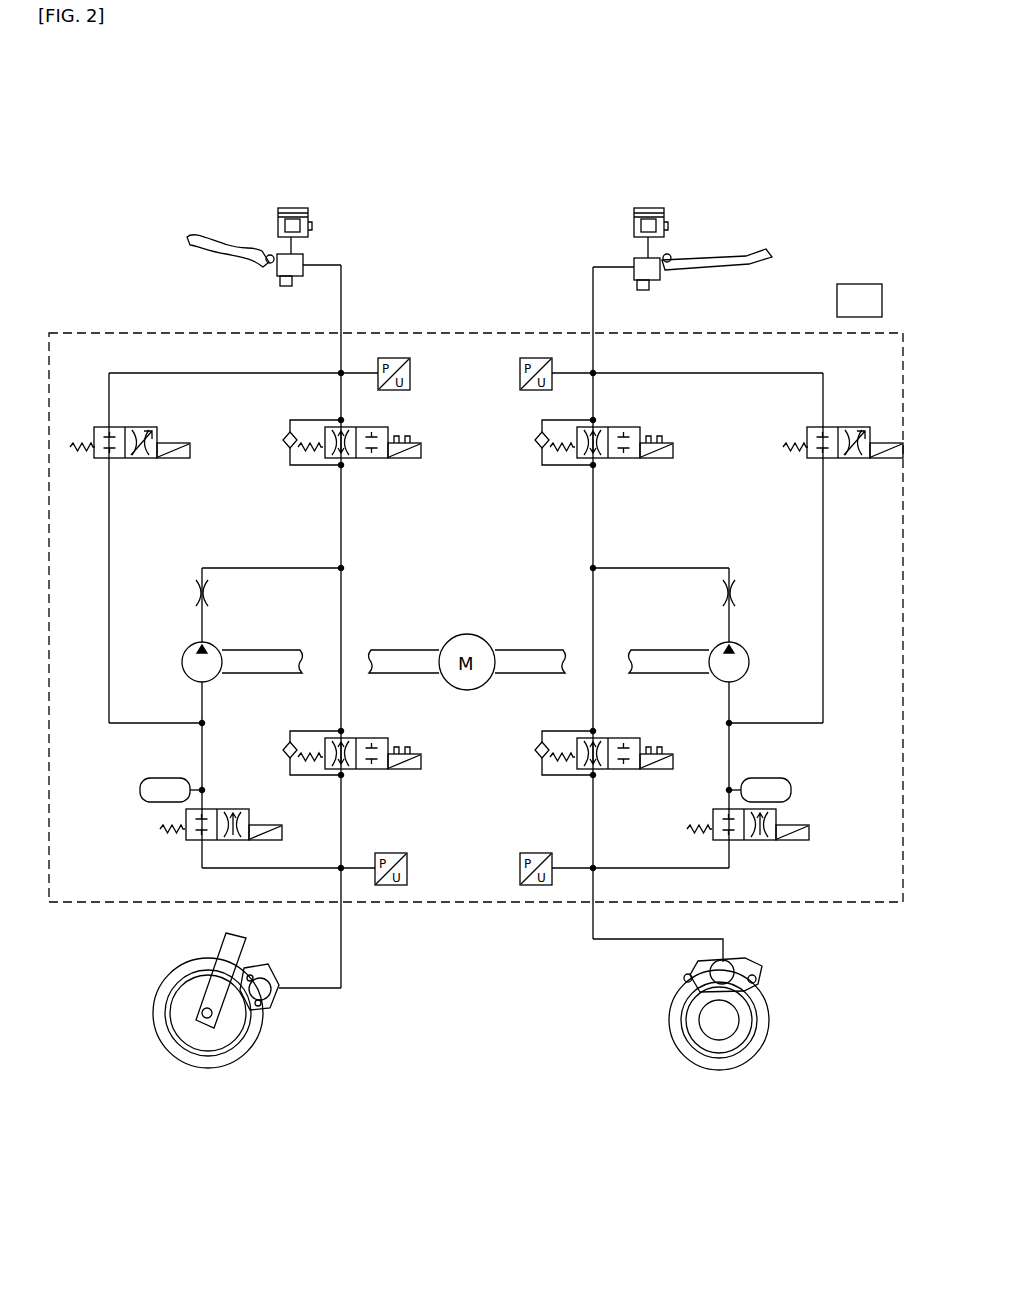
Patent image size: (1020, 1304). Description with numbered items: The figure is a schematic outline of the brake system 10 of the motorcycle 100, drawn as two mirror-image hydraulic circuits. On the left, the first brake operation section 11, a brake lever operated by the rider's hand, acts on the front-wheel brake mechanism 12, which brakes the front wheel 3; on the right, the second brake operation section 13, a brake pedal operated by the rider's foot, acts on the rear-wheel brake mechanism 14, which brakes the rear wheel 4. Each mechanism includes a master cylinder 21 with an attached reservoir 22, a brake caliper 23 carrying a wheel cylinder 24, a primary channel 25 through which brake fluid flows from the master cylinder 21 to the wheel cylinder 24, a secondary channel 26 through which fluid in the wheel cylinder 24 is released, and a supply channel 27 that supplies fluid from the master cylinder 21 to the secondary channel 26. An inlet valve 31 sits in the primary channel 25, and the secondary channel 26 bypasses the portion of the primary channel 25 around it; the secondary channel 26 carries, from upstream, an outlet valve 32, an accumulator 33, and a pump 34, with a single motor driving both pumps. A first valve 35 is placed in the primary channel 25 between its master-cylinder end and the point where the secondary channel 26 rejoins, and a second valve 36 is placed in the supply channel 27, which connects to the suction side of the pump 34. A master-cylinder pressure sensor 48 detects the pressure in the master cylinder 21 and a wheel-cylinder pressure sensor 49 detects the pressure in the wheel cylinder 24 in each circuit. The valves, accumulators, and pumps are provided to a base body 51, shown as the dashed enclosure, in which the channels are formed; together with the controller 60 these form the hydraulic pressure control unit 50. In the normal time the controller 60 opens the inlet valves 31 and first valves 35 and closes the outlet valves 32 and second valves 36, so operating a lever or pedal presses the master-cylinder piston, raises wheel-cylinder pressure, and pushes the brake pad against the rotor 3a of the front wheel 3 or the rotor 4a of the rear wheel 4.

The motorcycle 100 is at (889, 102).
The brake system 10 is at (148, 226).
The first brake operation section 11 is at (213, 238).
The front-wheel brake mechanism 12 is at (380, 153).
The second brake operation section 13 is at (743, 250).
The rear-wheel brake mechanism 14 is at (565, 148).
The master cylinder 21 is at (290, 288).
The reservoir 22 is at (288, 207).
The brake caliper 23 is at (262, 964).
The wheel cylinder 24 is at (276, 996).
The primary channel 25 is at (337, 500).
The secondary channel 26 is at (268, 566).
The supply channel 27 is at (243, 375).
The inlet valve 31 is at (378, 770).
The outlet valve 32 is at (233, 808).
The accumulator 33 is at (163, 777).
The pump 34 is at (181, 662).
The first valve 35 is at (401, 460).
The second valve 36 is at (157, 460).
The master-cylinder pressure sensor 48 is at (412, 377).
The wheel-cylinder pressure sensor 49 is at (409, 872).
The hydraulic pressure control unit 50 is at (805, 259).
The base body 51 is at (78, 332).
The controller 60 is at (862, 273).
The front wheel 3 is at (213, 1092).
The rotor 3a is at (250, 1045).
The rear wheel 4 is at (724, 1094).
The rotor 4a is at (681, 1044).